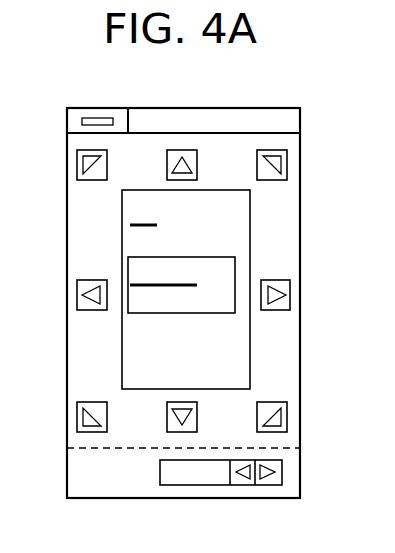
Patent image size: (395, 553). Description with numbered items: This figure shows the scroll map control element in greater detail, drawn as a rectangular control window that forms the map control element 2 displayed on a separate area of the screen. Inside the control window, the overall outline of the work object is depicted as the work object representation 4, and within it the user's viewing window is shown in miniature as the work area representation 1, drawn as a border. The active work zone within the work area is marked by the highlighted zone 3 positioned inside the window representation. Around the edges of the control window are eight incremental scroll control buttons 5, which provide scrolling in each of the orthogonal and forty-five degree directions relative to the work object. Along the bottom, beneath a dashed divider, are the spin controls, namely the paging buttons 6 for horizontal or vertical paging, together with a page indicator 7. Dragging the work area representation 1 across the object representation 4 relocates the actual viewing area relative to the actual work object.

The work area representation 1 is at (240, 262).
The map control element 2 is at (303, 202).
The highlighted work zone 3 is at (147, 285).
The work object representation 4 is at (253, 341).
The scroll control buttons 5 is at (294, 289).
The paging buttons 6 is at (280, 491).
The page indicator 7 is at (238, 490).